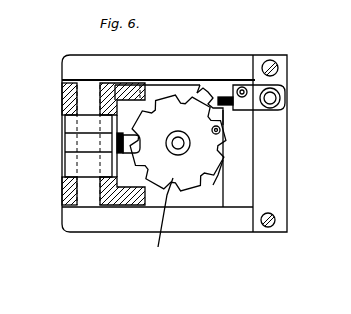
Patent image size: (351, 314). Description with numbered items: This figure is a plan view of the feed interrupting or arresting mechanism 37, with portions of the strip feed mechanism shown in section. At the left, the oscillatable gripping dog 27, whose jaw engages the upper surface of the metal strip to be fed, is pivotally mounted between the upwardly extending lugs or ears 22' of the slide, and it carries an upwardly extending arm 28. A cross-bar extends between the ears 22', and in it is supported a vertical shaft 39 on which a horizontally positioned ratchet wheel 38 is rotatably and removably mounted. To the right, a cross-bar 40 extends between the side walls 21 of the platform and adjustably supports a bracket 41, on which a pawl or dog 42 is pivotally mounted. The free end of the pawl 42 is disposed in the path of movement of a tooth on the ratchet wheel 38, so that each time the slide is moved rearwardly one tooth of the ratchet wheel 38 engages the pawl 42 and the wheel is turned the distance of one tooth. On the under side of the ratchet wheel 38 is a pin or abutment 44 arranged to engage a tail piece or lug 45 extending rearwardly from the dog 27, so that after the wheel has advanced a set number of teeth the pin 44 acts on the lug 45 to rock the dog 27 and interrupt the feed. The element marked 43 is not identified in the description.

The side walls 21 is at (218, 63).
The upwardly extending lugs or ears 22' is at (116, 155).
The oscillatable gripping dog 27 is at (73, 163).
The upwardly extending arm 28 is at (88, 143).
The feed interrupting or arresting mechanism 37 is at (178, 143).
The ratchet wheel 38 is at (160, 223).
The vertical shaft 39 is at (179, 141).
The cross-bar 40 is at (283, 144).
The bracket 41 is at (266, 88).
The pawl or dog 42 is at (210, 90).
The stop 43 is at (210, 181).
The pin or abutment 44 is at (220, 130).
The tail piece or lug 45 is at (122, 136).